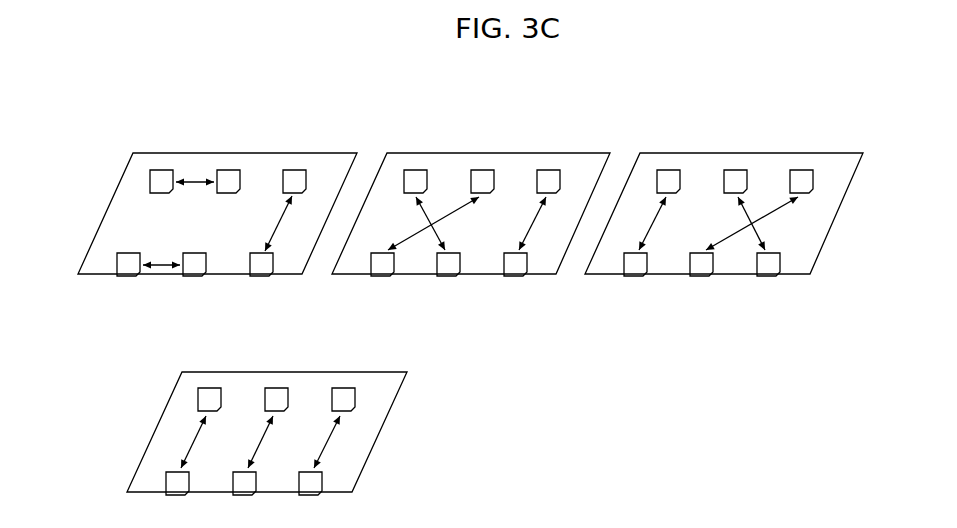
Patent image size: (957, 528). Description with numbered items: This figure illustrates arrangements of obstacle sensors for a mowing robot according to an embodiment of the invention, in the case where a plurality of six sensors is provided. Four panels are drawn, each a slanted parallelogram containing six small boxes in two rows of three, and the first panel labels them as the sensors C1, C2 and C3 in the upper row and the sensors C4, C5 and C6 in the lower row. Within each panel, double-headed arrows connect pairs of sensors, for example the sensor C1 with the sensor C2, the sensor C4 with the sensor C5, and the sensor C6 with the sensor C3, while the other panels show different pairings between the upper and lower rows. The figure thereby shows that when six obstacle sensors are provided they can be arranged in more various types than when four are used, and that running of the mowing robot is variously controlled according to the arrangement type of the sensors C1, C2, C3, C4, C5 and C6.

The sensor C1 is at (148, 178).
The sensor C2 is at (229, 170).
The sensor C3 is at (296, 170).
The sensor C4 is at (117, 263).
The sensor C5 is at (195, 278).
The sensor C6 is at (262, 278).